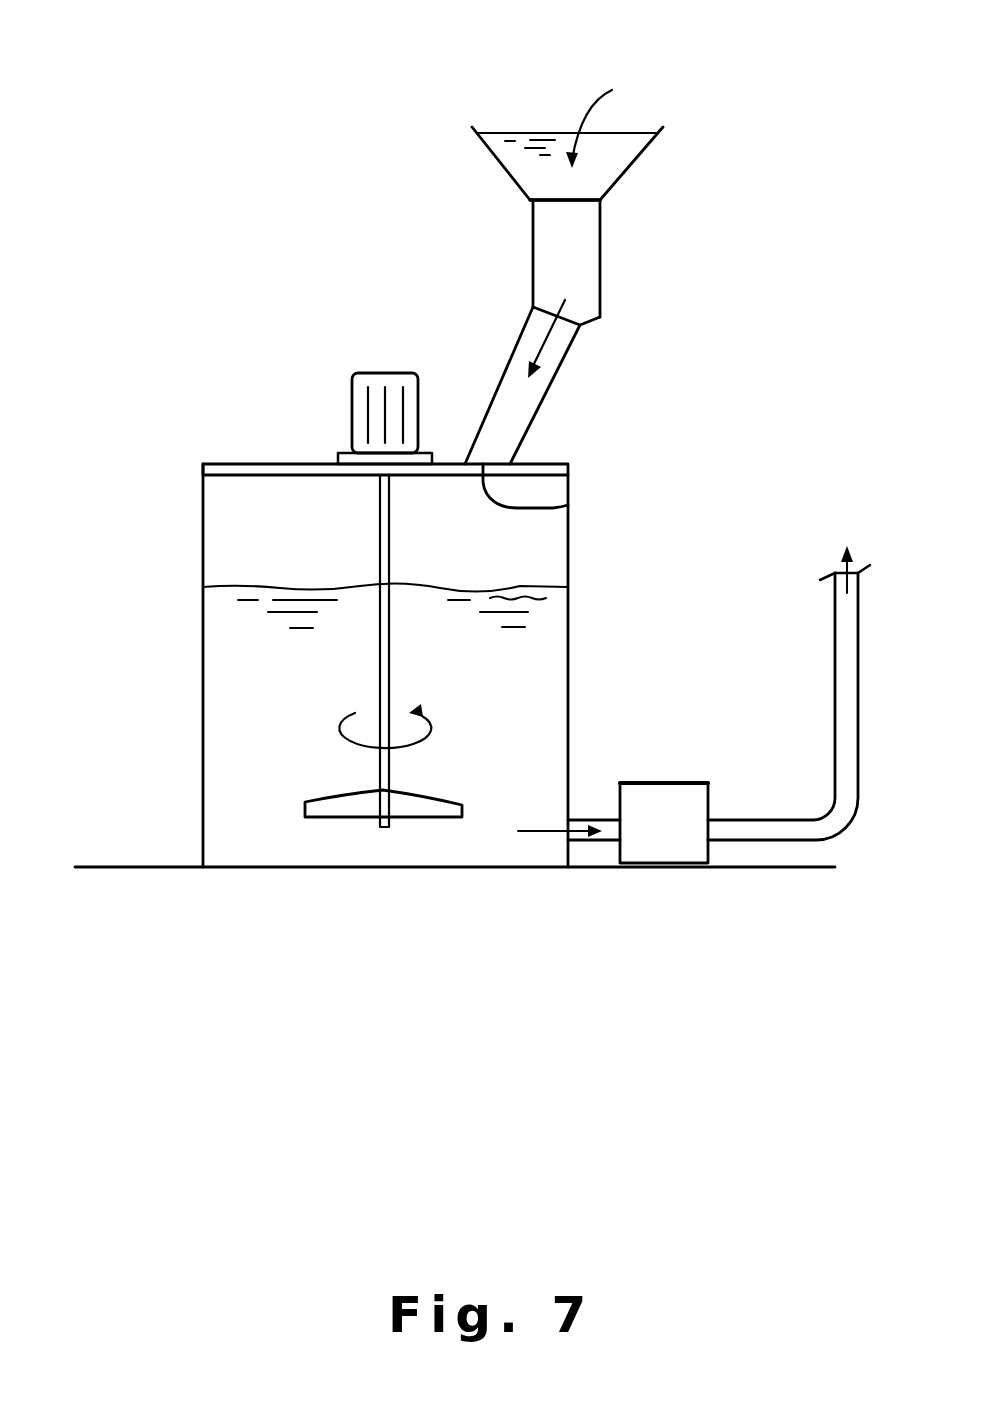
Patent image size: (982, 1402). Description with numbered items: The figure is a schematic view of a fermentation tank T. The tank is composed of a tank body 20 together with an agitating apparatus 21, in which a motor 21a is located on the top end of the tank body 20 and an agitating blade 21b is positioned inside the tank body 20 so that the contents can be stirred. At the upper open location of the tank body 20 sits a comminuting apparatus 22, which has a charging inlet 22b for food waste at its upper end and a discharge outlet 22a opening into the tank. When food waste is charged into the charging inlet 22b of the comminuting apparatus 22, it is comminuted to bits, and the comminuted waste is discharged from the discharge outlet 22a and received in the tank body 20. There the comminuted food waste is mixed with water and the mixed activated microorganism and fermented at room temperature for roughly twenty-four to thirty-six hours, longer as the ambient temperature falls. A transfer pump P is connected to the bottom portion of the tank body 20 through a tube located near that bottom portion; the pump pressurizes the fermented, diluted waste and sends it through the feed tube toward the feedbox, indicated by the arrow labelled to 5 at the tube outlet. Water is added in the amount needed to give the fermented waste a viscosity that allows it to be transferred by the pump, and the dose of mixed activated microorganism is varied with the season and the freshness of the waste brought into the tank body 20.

The treatment tank apparatus T is at (183, 533).
The tank body 20 is at (203, 652).
The agitating apparatus 21 is at (392, 541).
The motor 21a is at (383, 367).
The agitating blade 21b is at (337, 803).
The comminuting apparatus 22 is at (600, 230).
The discharge outlet 22a is at (568, 505).
The charging inlet 22b is at (617, 147).
The to device 5 is at (864, 531).